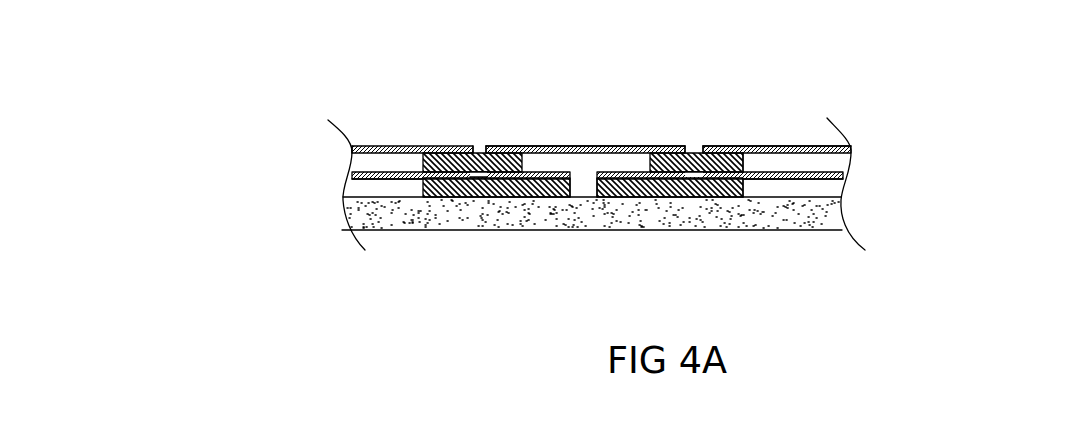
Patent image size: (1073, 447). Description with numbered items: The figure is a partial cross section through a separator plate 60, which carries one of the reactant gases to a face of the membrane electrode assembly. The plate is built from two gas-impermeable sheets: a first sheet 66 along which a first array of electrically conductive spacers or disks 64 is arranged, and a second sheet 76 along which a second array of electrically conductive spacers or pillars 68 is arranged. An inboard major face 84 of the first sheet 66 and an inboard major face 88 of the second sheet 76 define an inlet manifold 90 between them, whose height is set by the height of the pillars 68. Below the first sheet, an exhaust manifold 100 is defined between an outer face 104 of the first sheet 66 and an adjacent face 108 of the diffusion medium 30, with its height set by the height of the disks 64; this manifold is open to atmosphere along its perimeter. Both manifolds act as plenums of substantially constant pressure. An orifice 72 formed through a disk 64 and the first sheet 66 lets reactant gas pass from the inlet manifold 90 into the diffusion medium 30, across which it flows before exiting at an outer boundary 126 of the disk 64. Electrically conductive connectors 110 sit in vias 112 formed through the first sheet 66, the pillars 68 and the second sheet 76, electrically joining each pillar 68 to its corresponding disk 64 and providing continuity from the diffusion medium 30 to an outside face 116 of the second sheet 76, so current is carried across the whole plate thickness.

The separator plate 60 is at (317, 60).
The diffusion medium 30 is at (505, 216).
The inboard major face of the first sheet 84 is at (353, 166).
The second sheet 76 is at (852, 146).
The first sheet 66 is at (847, 176).
The inboard major face of the second sheet 88 is at (373, 155).
The adjacent face of the diffusion medium 108 is at (398, 197).
The pillar 68 is at (658, 146).
The disk 64 is at (648, 197).
The electrically conductive connector 110 is at (482, 146).
The via 112 is at (471, 174).
The orifice 72 is at (596, 183).
The inlet manifold 90 is at (787, 159).
The outside face of the second sheet 116 is at (803, 147).
The exhaust manifold 100 is at (809, 188).
The outer boundary of the spacer 126 is at (745, 189).
The outer face of the first sheet 104 is at (380, 176).